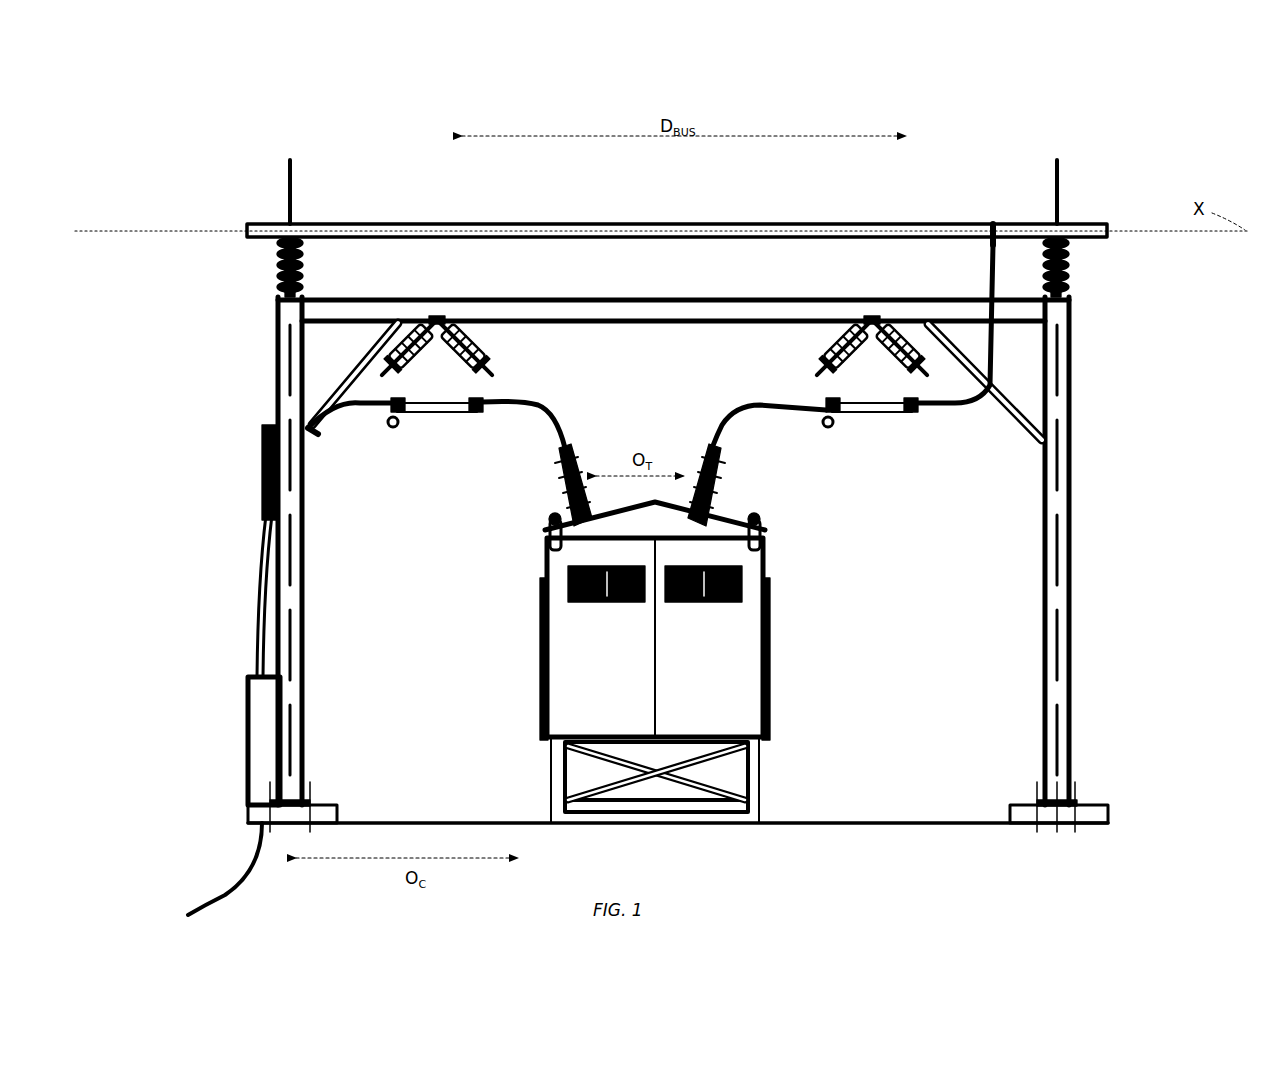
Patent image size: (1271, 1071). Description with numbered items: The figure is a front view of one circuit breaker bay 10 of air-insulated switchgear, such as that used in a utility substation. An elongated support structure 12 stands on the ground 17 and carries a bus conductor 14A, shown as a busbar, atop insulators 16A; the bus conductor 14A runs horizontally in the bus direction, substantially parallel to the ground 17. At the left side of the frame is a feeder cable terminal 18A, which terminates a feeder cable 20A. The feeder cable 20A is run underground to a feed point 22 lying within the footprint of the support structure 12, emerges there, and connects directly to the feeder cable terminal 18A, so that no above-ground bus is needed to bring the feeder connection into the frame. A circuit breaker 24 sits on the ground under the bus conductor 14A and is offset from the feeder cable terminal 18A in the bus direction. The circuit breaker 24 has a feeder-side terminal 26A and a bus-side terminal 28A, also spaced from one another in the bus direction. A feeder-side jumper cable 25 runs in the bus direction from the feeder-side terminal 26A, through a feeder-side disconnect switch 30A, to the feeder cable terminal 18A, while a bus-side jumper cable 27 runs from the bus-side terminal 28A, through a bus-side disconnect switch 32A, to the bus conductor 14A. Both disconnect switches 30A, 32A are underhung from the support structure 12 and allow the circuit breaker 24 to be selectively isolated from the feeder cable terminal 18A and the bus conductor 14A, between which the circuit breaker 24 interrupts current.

The circuit breaker bay 10 is at (134, 188).
The bus conductor 14A is at (452, 222).
The insulators 16A is at (276, 276).
The support structure 12 is at (276, 346).
The feeder cable terminal 18A is at (262, 428).
The feeder cable 20A is at (252, 612).
The feed point 22 is at (246, 800).
The feeder-side jumper cable 25 is at (324, 432).
The bus-side jumper cable 27 is at (732, 400).
The feeder-side disconnect switch 30A is at (433, 428).
The bus-side disconnect switch 32A is at (868, 430).
The feeder-side terminal 26A is at (560, 496).
The bus-side terminal 28A is at (708, 490).
The circuit breaker 24 is at (782, 672).
The ground 17 is at (930, 820).